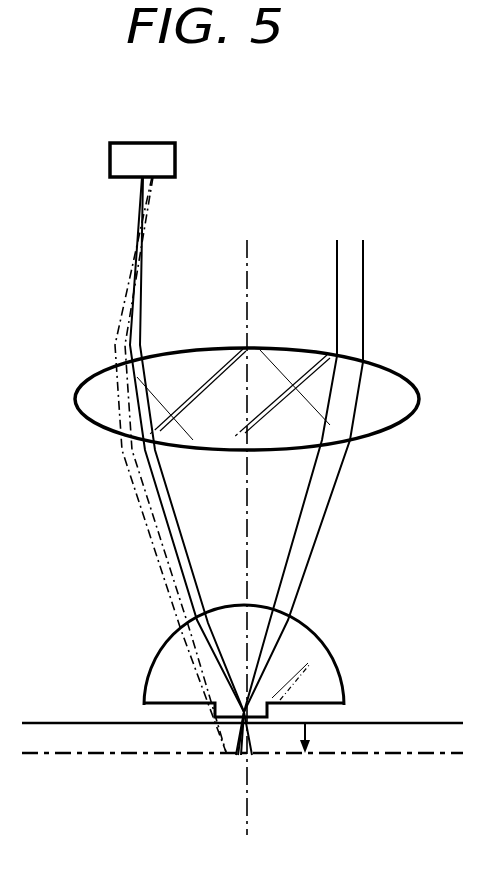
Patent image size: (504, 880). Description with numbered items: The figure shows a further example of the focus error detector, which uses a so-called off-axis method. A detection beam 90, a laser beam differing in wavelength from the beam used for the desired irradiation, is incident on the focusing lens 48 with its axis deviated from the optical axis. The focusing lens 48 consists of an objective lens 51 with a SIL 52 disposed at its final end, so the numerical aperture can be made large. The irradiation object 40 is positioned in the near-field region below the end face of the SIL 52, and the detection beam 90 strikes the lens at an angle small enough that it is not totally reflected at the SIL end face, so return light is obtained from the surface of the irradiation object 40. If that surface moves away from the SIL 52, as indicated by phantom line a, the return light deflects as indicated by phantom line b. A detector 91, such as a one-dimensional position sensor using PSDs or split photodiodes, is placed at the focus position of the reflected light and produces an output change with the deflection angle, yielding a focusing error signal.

The detector 91 is at (141, 143).
The detection beam 90 is at (363, 272).
The objective lens 51 is at (392, 398).
The focusing lens 48 is at (424, 548).
The SIL 52 is at (305, 651).
The irradiation object 40 is at (430, 737).
The phantom line a is at (80, 756).
The phantom line b is at (162, 578).